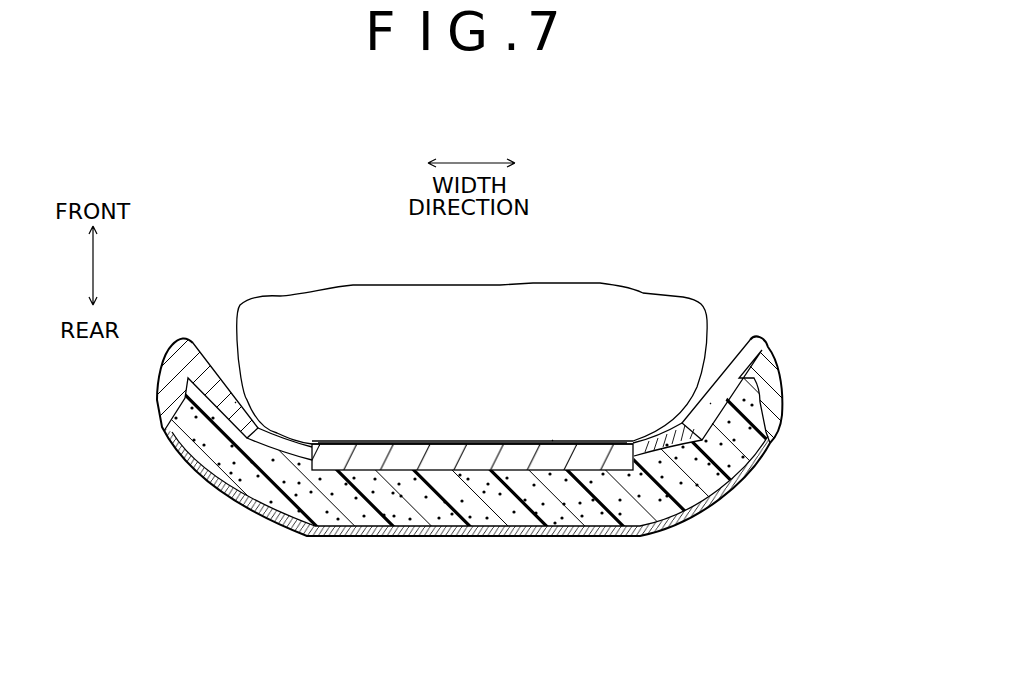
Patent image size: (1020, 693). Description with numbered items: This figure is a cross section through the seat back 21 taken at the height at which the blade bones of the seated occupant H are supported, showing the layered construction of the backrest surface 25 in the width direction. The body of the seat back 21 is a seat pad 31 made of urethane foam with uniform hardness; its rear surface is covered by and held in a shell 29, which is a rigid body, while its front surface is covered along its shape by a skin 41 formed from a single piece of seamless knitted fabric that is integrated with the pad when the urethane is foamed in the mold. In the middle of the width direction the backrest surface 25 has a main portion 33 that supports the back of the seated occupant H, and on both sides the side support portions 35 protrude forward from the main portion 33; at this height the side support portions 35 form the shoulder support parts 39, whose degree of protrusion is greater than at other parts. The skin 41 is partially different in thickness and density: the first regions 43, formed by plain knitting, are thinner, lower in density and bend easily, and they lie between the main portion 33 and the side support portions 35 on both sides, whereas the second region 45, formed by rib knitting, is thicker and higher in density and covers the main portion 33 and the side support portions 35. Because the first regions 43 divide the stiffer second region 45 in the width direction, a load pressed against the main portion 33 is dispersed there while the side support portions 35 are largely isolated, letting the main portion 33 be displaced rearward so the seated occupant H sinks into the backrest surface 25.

The seat back 21 is at (510, 442).
The backrest surface 25 is at (463, 434).
The shell 29 is at (510, 537).
The seat pad 31 is at (563, 510).
The main portion 33 is at (417, 443).
The side support portions 35 is at (217, 373).
The shoulder support parts 39 is at (723, 368).
The skin 41 is at (507, 453).
The first regions 43 is at (297, 445).
The second region 45 is at (235, 402).
The seated occupant H is at (613, 285).